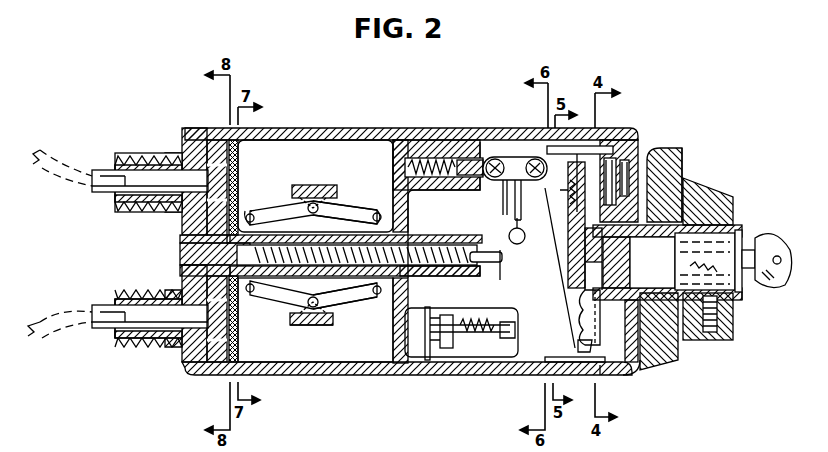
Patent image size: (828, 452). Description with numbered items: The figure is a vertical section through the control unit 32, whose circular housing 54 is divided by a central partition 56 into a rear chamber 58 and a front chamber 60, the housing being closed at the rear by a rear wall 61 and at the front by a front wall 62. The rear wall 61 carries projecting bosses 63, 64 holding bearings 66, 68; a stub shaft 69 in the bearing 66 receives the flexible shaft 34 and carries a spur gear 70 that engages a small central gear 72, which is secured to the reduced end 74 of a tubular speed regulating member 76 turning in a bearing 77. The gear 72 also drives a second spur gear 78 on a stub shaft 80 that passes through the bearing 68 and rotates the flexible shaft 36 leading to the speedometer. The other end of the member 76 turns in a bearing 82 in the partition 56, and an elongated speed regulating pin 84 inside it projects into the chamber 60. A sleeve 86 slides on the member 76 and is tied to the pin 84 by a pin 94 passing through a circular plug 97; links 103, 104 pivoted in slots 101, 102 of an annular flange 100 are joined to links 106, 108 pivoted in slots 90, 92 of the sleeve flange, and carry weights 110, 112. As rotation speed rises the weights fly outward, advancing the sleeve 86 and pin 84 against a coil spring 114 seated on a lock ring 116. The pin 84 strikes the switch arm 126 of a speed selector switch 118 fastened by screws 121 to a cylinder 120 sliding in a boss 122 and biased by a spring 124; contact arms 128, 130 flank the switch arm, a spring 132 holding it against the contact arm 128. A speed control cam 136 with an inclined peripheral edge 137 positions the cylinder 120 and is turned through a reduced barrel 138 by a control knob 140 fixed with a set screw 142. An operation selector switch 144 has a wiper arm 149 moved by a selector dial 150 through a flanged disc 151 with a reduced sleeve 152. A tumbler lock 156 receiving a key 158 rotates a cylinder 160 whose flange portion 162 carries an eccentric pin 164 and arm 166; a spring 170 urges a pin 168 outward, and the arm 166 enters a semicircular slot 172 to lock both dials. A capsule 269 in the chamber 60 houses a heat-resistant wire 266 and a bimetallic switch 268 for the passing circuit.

The control unit 32 is at (313, 106).
The flexible shaft 34 is at (48, 330).
The flexible shaft 36 is at (84, 168).
The circular housing 54 is at (385, 128).
The central partition 56 is at (400, 372).
The chamber 58 is at (333, 365).
The chamber 60 is at (522, 360).
The rear wall 61 is at (184, 225).
The front wall 62 is at (645, 372).
The boss 63 is at (182, 352).
The boss 64 is at (172, 153).
The bearing 66 is at (138, 350).
The bearing 68 is at (125, 153).
The stub shaft 69 is at (103, 328).
The spur gear 70 is at (213, 365).
The central gear 72 is at (180, 270).
The reduced end 74 is at (180, 256).
The speed regulating member 76 is at (432, 235).
The bearing 77 is at (180, 238).
The second spur gear 78 is at (216, 142).
The stub shaft 80 is at (102, 192).
The bearing 82 is at (416, 277).
The speed regulating pin 84 is at (485, 263).
The sleeve 86 is at (275, 214).
The slot 90 is at (243, 210).
The slot 92 is at (243, 300).
The pin 94 is at (262, 296).
The circular plug 97 is at (252, 212).
The annular flange 100 is at (348, 302).
The slot 101 is at (380, 210).
The slot 102 is at (380, 300).
The link 103 is at (347, 212).
The link 104 is at (338, 312).
The link 106 is at (297, 186).
The link 108 is at (291, 326).
The weight 110 is at (320, 186).
The weight 112 is at (312, 326).
The coil spring 114 is at (464, 235).
The lock ring 116 is at (470, 276).
The speed selector switch 118 is at (530, 156).
The cylinder 120 is at (465, 160).
The screws 121 is at (488, 158).
The boss 122 is at (438, 191).
The spring 124 is at (428, 158).
The switch arm 126 is at (503, 262).
The contact arm 128 is at (523, 212).
The contact arm 130 is at (502, 208).
The spring 132 is at (509, 240).
The speed control cam 136 is at (577, 348).
The inclined peripheral edge 137 is at (578, 326).
The reduced barrel 138 is at (728, 202).
The control knob 140 is at (735, 216).
The set screw 142 is at (715, 336).
The operation selector switch 144 is at (664, 160).
The wiper arm 149 is at (628, 175).
The selector dial 150 is at (685, 190).
The flanged disc 151 is at (613, 160).
The reduced sleeve 152 is at (652, 376).
The tumbler lock 156 is at (742, 292).
The key 158 is at (770, 242).
The cylinder 160 is at (705, 232).
The flange portion 162 is at (582, 300).
The pin 164 is at (585, 280).
The arm 166 is at (568, 244).
The pin 168 is at (610, 146).
The spring 170 is at (570, 196).
The semicircular slot 172 is at (608, 378).
The heat-resistant wire 266 is at (458, 362).
The bimetallic switch 268 is at (492, 342).
The capsule 269 is at (462, 350).